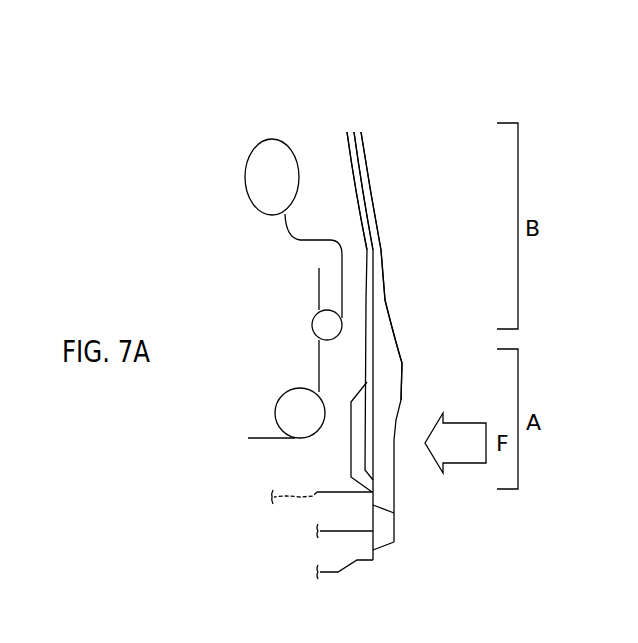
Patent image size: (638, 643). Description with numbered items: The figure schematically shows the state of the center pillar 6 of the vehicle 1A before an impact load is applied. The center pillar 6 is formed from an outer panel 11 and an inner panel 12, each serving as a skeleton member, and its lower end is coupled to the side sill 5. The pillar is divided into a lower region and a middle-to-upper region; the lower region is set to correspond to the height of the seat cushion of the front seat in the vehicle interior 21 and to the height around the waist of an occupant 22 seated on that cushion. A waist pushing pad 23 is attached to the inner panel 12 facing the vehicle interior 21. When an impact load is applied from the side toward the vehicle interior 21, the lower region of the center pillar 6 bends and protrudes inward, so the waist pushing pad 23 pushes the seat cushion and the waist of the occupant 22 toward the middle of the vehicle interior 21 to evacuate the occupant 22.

The vehicle 1A is at (403, 156).
The inner panel 12 is at (345, 143).
The center pillar 6 is at (423, 323).
The outer panel 11 is at (402, 365).
The vehicle interior 21 is at (345, 203).
The occupant 22 is at (275, 341).
The waist pushing pad 23 is at (351, 460).
The side sill 5 is at (396, 529).